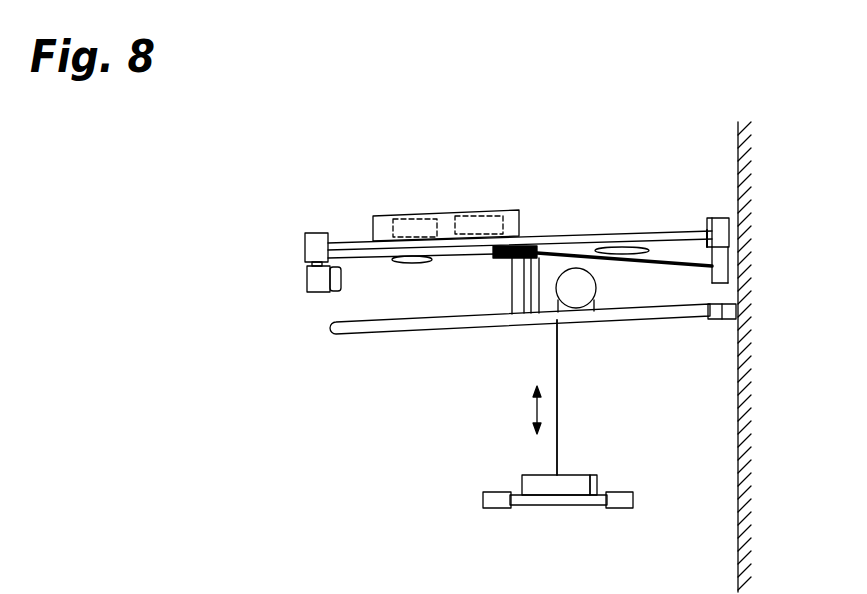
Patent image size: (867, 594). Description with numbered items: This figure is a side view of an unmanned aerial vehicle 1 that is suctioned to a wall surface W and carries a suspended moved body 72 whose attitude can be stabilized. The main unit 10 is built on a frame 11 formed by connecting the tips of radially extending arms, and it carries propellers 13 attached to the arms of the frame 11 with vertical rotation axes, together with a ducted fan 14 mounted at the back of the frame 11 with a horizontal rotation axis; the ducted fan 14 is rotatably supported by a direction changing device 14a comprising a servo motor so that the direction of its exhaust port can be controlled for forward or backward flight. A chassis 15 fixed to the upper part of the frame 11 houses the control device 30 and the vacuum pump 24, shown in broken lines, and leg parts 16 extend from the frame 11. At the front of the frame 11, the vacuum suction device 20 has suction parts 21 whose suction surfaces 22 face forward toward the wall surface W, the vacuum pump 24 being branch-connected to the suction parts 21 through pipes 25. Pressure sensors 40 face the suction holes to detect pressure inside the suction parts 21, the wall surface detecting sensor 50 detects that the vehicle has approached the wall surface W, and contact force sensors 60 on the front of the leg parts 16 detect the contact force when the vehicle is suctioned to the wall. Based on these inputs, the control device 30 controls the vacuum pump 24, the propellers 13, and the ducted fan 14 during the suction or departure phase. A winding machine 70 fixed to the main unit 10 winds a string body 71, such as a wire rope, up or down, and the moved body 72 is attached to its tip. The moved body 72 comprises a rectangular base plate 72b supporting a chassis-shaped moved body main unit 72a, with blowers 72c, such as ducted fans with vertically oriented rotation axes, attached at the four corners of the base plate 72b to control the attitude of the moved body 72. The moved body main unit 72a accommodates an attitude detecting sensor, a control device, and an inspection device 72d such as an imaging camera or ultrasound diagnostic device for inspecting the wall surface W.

The unmanned aerial vehicle 1 is at (648, 148).
The main unit 10 is at (573, 216).
The frame 11 is at (607, 233).
The propellers 13 is at (394, 264).
The ducted fan 14 is at (308, 283).
The direction changing device 14a is at (306, 247).
The chassis 15 is at (373, 219).
The leg parts 16 is at (471, 334).
The vacuum suction device 20 is at (671, 318).
The suction parts 21 is at (717, 287).
The suction surface 22 is at (728, 262).
The vacuum pump 24 is at (476, 213).
The pipes 25 is at (566, 252).
The control device 30 is at (397, 214).
The pressure sensors 40 is at (707, 232).
The wall surface detecting sensor 50 is at (716, 218).
The contact force sensors 60 is at (726, 322).
The winding machine 70 is at (578, 299).
The string body 71 is at (560, 388).
The moved body 72 is at (486, 463).
The moved body main unit 72a is at (523, 473).
The base plate 72b is at (574, 507).
The blowers 72c is at (497, 509).
The inspection device 72d is at (597, 484).
The wall surface W is at (738, 483).